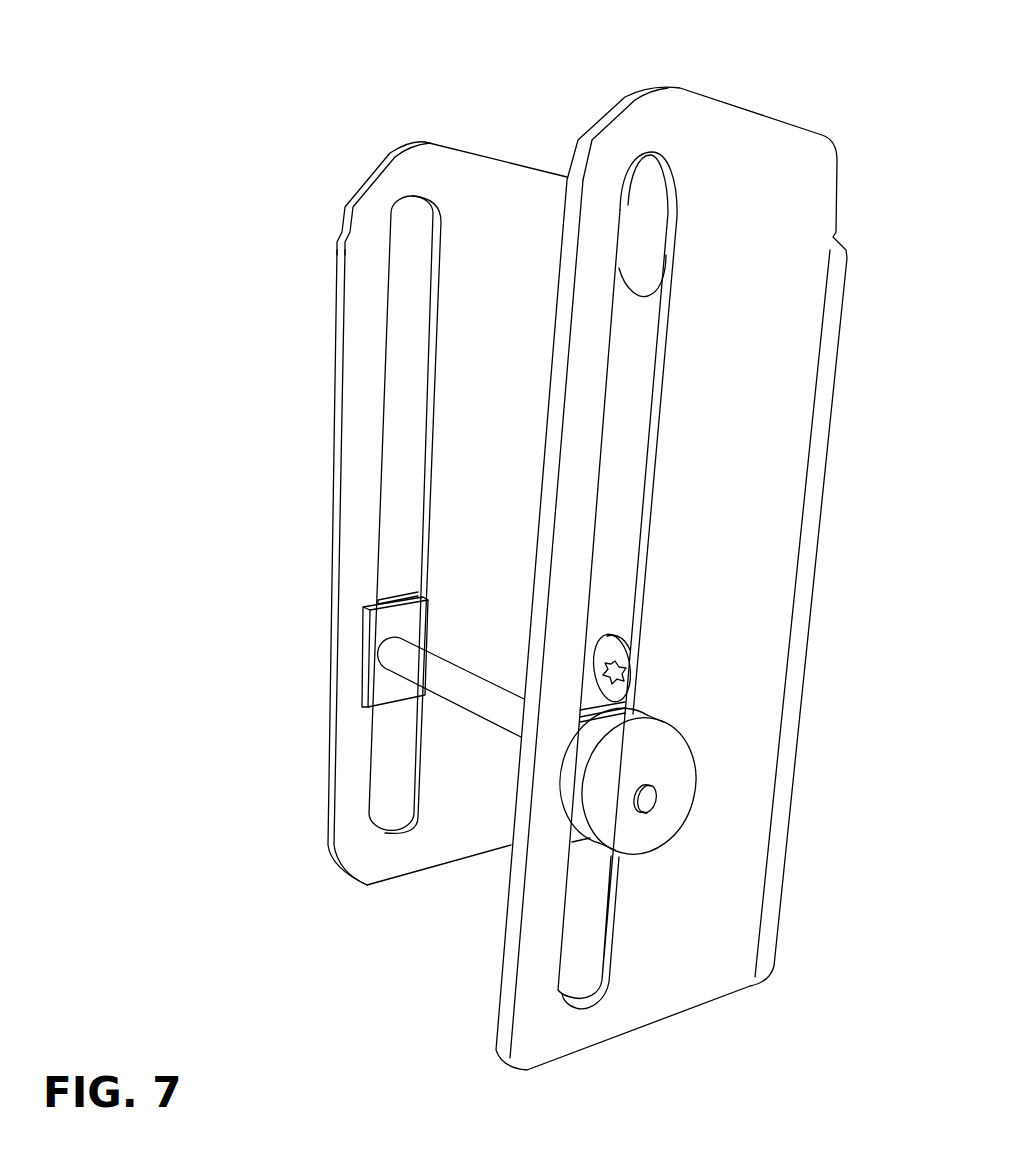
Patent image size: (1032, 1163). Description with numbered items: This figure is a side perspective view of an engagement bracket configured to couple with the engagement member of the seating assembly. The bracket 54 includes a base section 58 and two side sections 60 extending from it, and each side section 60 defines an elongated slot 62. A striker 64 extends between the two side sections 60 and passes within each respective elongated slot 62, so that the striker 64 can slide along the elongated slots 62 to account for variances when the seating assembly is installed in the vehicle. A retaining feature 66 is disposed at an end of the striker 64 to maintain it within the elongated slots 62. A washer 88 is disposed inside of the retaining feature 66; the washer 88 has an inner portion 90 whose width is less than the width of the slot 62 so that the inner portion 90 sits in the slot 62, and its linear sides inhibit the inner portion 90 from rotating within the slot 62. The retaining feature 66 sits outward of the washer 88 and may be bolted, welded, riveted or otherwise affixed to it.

The bracket 54 is at (616, 551).
The base section 58 is at (633, 337).
The side section 60 is at (478, 193).
The elongated slot 62 is at (380, 778).
The striker 64 is at (480, 697).
The retaining feature 66 is at (645, 798).
The washer 88 is at (392, 598).
The inner portion 90 is at (381, 679).